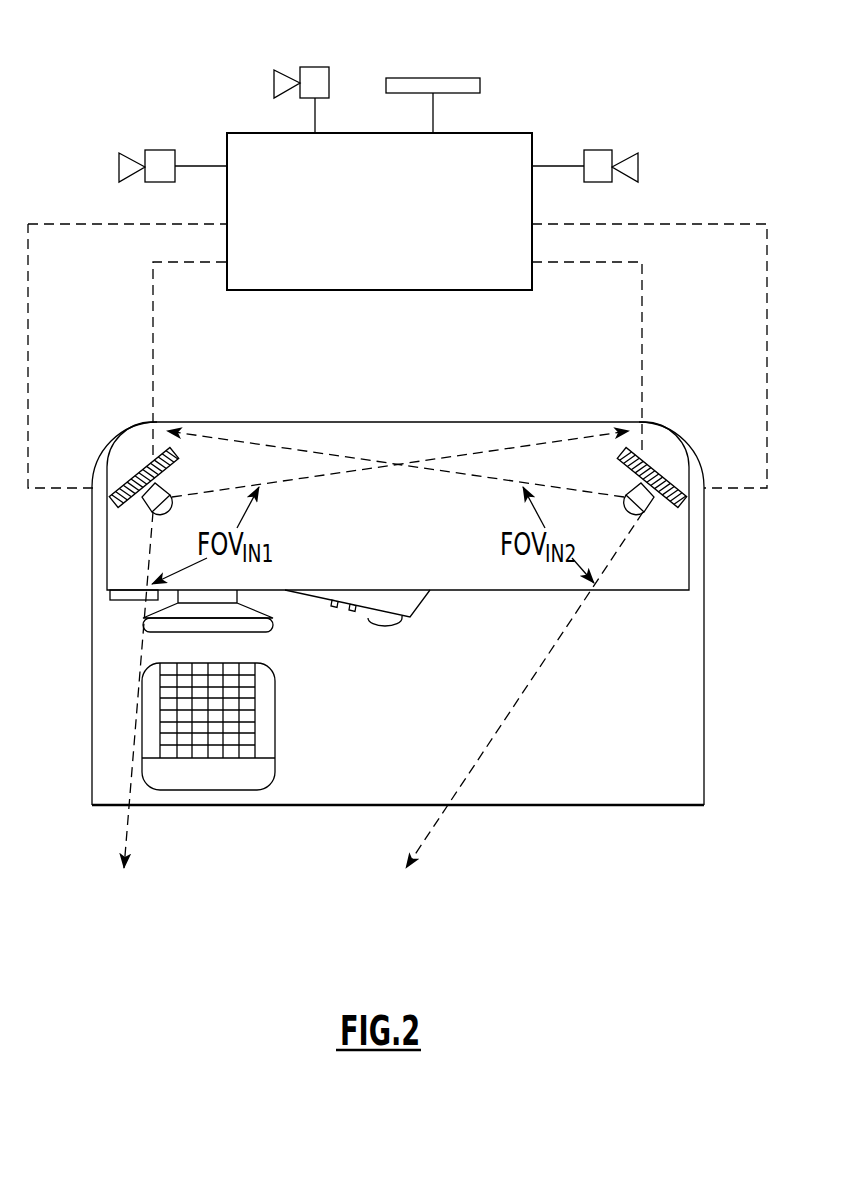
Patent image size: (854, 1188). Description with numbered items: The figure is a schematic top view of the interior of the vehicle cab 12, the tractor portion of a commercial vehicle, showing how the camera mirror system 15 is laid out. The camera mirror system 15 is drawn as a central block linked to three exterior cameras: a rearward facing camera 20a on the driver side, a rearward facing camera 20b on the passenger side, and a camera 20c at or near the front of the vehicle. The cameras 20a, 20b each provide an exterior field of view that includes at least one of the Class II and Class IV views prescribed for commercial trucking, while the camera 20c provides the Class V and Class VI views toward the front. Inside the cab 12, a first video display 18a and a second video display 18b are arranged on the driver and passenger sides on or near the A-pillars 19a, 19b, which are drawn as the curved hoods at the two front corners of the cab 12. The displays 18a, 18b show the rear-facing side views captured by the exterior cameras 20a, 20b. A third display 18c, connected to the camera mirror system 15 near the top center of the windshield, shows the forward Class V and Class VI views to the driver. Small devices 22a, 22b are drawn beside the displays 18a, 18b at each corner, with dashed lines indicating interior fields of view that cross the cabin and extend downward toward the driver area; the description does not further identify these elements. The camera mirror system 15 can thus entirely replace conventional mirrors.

The vehicle cab 12 is at (512, 398).
The camera mirror system 15 is at (533, 145).
The first video display 18a is at (137, 460).
The second video display 18b is at (654, 460).
The third display 18c is at (465, 78).
The A-pillar 19a is at (108, 458).
The A-pillar 19b is at (688, 458).
The rearward facing camera 20a is at (160, 150).
The rearward facing camera 20b is at (600, 150).
The camera 20c is at (310, 67).
The first illuminator / imaging device 22a is at (172, 486).
The second illuminator / imaging device 22b is at (623, 486).